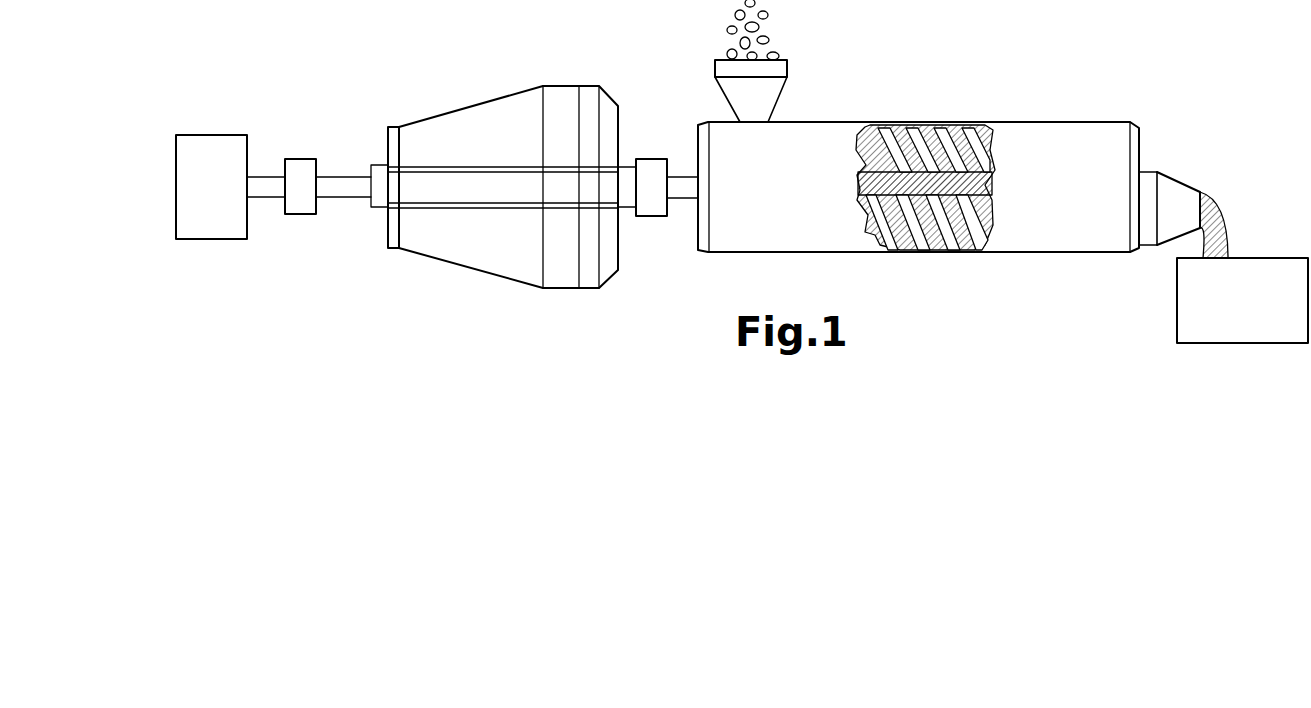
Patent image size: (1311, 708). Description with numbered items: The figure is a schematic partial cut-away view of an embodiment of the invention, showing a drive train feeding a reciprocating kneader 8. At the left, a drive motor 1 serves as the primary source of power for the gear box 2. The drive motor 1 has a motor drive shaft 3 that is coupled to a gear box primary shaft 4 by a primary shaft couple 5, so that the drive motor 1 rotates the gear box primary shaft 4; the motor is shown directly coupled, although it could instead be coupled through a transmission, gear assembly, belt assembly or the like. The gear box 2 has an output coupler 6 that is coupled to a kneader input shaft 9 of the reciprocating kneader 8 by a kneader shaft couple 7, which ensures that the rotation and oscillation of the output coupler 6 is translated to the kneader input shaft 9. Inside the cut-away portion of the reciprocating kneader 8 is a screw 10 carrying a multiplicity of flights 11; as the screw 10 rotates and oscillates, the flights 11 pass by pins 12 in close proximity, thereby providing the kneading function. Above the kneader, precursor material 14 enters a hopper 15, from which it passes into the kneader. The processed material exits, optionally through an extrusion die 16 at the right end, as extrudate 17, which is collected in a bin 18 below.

The drive motor 1 is at (205, 133).
The gear box 2 is at (452, 108).
The motor drive shaft 3 is at (268, 176).
The gear box primary shaft 4 is at (345, 176).
The primary shaft couple 5 is at (305, 214).
The output coupler 6 is at (628, 166).
The kneader shaft couple 7 is at (653, 158).
The reciprocating kneader 8 is at (1072, 122).
The kneader input shaft 9 is at (688, 199).
The screw 10 is at (992, 172).
The flights 11 is at (858, 170).
The pins 12 is at (905, 124).
The precursor material 14 is at (770, 38).
The hopper 15 is at (765, 88).
The extrusion die 16 is at (1163, 176).
The extrudate 17 is at (1218, 232).
The bin 18 is at (1268, 258).